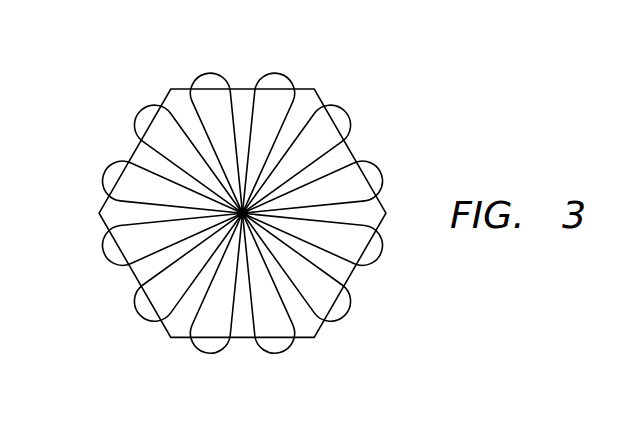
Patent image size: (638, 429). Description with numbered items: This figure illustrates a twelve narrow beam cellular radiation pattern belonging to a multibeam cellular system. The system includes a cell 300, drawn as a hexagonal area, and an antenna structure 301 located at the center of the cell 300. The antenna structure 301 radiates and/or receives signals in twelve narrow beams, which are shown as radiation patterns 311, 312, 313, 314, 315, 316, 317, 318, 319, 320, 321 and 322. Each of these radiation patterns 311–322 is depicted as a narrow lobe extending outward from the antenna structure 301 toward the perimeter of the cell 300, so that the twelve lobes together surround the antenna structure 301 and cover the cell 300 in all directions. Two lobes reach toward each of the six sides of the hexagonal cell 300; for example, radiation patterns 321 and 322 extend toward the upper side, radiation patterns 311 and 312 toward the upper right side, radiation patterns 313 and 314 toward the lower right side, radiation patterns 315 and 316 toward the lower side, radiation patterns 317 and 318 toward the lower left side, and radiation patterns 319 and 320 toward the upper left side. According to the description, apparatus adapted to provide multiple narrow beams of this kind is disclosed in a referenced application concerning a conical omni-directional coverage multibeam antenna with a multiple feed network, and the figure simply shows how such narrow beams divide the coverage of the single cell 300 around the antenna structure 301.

The cell 300 is at (248, 89).
The antenna structure 301 is at (243, 305).
The radiation pattern 311 is at (345, 111).
The radiation pattern 312 is at (382, 176).
The radiation pattern 313 is at (382, 251).
The radiation pattern 314 is at (345, 315).
The radiation pattern 315 is at (280, 353).
The radiation pattern 316 is at (206, 353).
The radiation pattern 317 is at (140, 315).
The radiation pattern 318 is at (103, 251).
The radiation pattern 319 is at (103, 176).
The radiation pattern 320 is at (141, 111).
The radiation pattern 321 is at (205, 73).
The radiation pattern 322 is at (281, 74).